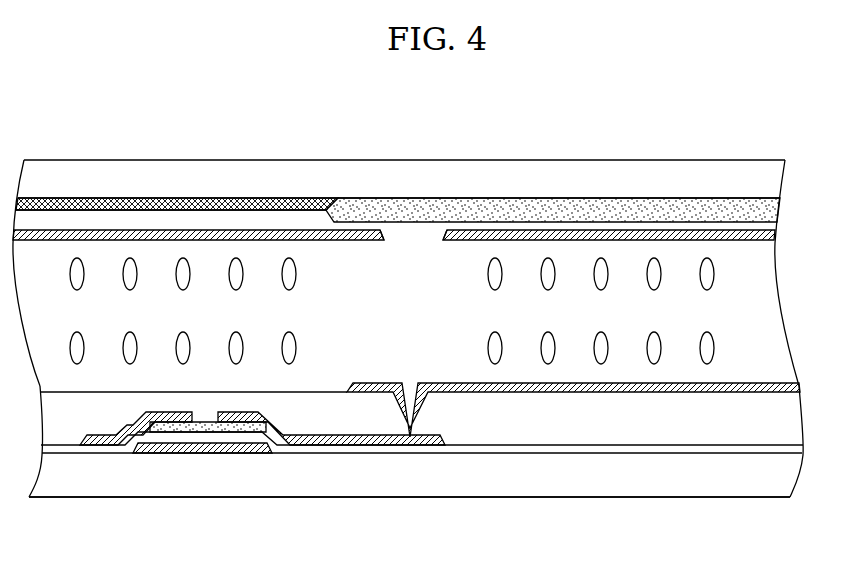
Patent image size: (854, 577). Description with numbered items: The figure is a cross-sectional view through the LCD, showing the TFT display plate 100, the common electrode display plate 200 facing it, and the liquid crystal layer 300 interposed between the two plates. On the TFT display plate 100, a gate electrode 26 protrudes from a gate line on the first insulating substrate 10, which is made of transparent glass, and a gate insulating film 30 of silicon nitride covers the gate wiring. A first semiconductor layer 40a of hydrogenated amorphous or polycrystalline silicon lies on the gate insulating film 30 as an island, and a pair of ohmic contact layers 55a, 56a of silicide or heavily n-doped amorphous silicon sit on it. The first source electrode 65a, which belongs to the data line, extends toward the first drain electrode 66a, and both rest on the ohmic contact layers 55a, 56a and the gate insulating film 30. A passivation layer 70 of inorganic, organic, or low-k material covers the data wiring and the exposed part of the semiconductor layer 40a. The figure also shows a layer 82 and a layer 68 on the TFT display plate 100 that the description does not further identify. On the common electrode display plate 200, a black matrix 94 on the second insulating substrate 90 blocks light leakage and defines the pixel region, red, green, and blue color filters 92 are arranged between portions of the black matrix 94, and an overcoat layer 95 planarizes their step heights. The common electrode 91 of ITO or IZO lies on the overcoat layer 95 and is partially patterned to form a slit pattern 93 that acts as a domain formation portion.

The first insulating substrate 10 is at (337, 488).
The gate electrode 26 is at (231, 449).
The gate insulating film 30 is at (463, 450).
The first semiconductor layer 40a is at (187, 428).
The ohmic contact layer 55a is at (148, 432).
The ohmic contact layer 56a is at (248, 433).
The first source electrode 65a is at (117, 447).
The first drain electrode 66a is at (283, 445).
The interlayer insulating layer 68 is at (610, 440).
The passivation layer 70 is at (62, 438).
The planarization layer 82 is at (528, 392).
The second insulating substrate 90 is at (105, 183).
The common electrode 91 is at (48, 230).
The color filters 92 is at (458, 205).
The slit pattern 93 is at (416, 236).
The black matrix 94 is at (240, 195).
The overcoat layer 95 is at (163, 218).
The TFT display plate 100 is at (808, 386).
The common electrode display plate 200 is at (808, 160).
The liquid crystal layer 300 is at (808, 243).